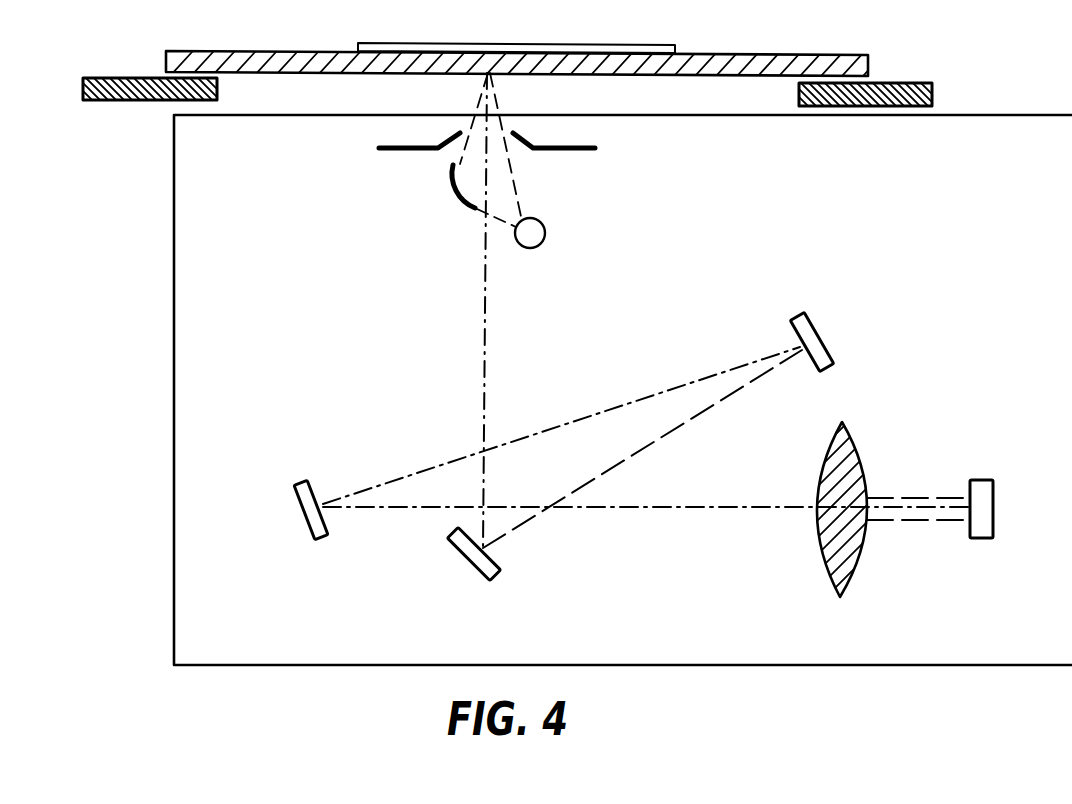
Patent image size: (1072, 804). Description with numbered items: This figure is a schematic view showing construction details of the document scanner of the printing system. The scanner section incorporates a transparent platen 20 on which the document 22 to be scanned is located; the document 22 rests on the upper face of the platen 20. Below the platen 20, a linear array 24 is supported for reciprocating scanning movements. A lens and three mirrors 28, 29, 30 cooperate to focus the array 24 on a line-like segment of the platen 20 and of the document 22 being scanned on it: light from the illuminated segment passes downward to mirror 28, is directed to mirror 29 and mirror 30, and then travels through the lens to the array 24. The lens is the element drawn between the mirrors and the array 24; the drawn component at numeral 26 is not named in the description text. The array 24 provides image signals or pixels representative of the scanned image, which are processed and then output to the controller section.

The transparent platen 20 is at (280, 73).
The document 22 is at (575, 44).
The linear array 24 is at (982, 480).
The lens 26 is at (855, 562).
The mirror 28 is at (470, 570).
The mirror 29 is at (822, 335).
The mirror 30 is at (302, 518).